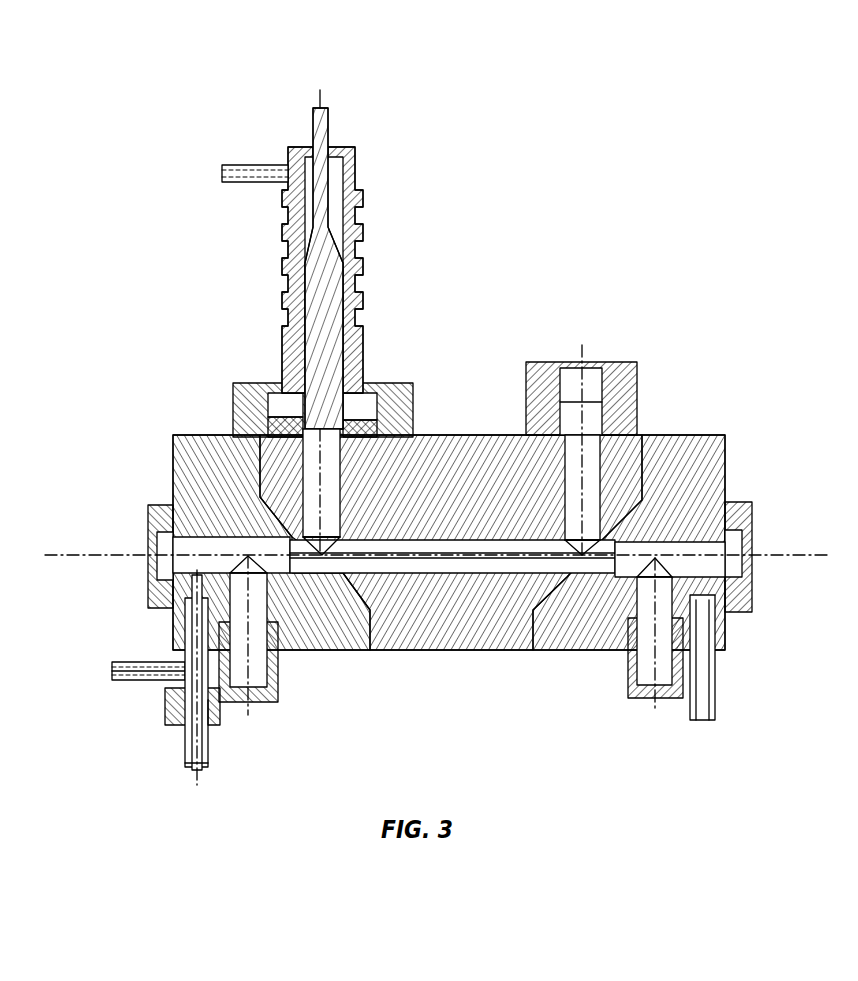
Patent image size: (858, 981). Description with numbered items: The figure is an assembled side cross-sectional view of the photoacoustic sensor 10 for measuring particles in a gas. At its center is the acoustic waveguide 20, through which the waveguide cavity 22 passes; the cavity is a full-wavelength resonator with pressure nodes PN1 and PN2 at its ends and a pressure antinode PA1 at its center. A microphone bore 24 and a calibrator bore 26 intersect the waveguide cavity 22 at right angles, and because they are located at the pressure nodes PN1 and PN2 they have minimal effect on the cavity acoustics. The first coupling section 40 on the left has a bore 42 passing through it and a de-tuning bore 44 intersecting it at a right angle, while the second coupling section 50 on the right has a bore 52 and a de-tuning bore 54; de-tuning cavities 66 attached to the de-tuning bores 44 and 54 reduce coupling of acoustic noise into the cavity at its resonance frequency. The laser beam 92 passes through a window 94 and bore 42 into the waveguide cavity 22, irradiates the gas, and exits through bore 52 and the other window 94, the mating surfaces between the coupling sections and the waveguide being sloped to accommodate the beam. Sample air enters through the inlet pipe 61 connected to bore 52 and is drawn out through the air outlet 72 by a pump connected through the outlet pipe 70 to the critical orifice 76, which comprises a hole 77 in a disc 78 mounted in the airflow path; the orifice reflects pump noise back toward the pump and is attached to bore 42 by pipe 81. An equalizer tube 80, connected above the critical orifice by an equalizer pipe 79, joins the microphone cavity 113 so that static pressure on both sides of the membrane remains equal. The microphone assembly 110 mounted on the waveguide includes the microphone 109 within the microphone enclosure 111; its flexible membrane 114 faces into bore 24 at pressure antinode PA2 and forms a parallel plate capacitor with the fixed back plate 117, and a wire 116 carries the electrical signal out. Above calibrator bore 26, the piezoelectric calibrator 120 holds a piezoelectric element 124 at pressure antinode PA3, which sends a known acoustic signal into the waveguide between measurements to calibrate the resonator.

The photoacoustic sensor 10 is at (622, 200).
The acoustic waveguide 20 is at (487, 431).
The waveguide cavity 22 is at (452, 578).
The microphone bore 24 is at (334, 503).
The calibrator bore 26 is at (583, 495).
The first coupling section 40 is at (173, 428).
The bore 42 is at (193, 546).
The de-tuning bore 44 is at (262, 598).
The second coupling section 50 is at (698, 430).
The bore 52 is at (704, 545).
The de-tuning bore 54 is at (645, 598).
The inlet pipe 61 is at (716, 696).
The de-tuning cavities 66 is at (278, 682).
The outlet pipe 70 is at (185, 745).
The air outlet 72 is at (193, 768).
The critical orifice 76 is at (165, 708).
The hole 77 is at (198, 712).
The disc 78 is at (183, 680).
The equalizer pipe 79 is at (123, 660).
The equalizer tube 80 is at (250, 163).
The pipe 81 is at (185, 652).
The laser beam 92 is at (112, 555).
The windows 94 is at (168, 505).
The microphone 109 is at (333, 238).
The microphone assembly 110 is at (351, 237).
The microphone enclosure 111 is at (236, 396).
The microphone cavity 113 is at (338, 181).
The flexible membrane 114 is at (268, 424).
The wire 116 is at (318, 112).
The back plate 117 is at (338, 418).
The piezoelectric calibrator 120 is at (540, 362).
The piezoelectric element 124 is at (612, 420).
The pressure node PN1 is at (310, 535).
The pressure node PN2 is at (527, 576).
The pressure antinode PA1 is at (423, 572).
The pressure antinode PA2 is at (332, 477).
The pressure antinode PA3 is at (571, 446).